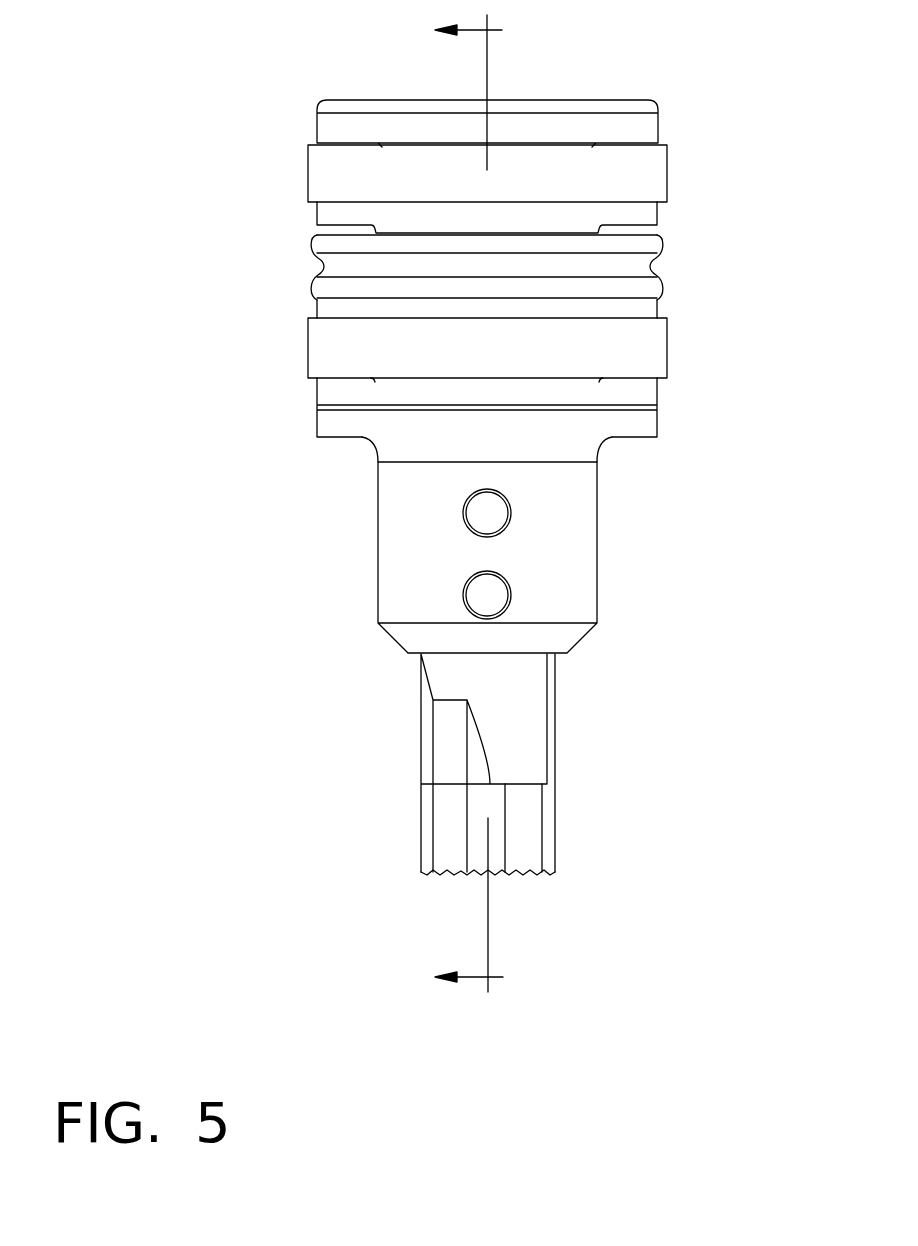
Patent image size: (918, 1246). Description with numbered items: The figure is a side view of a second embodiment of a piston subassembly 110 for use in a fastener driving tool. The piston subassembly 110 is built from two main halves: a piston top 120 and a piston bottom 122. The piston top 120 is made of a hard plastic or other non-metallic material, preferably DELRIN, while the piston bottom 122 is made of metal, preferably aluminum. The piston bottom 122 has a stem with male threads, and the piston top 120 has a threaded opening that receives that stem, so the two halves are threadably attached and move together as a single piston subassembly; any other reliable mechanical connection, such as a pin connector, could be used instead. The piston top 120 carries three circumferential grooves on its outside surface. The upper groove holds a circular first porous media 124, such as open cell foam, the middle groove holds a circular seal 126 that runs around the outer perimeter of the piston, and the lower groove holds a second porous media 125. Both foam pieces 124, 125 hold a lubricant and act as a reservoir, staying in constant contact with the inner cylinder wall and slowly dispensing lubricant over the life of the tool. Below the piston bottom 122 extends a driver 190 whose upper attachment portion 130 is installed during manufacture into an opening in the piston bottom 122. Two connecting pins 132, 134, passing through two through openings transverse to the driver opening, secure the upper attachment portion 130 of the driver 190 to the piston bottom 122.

The piston subassembly 110 is at (469, 505).
The piston top 120 is at (650, 125).
The first porous media 124 is at (655, 170).
The circular seal 126 is at (647, 245).
The second porous media 125 is at (650, 347).
The piston bottom 122 is at (645, 420).
The connecting pin 132 is at (493, 515).
The connecting pin 134 is at (493, 590).
The upper attachment portion 130 is at (512, 733).
The driver 190 is at (532, 842).